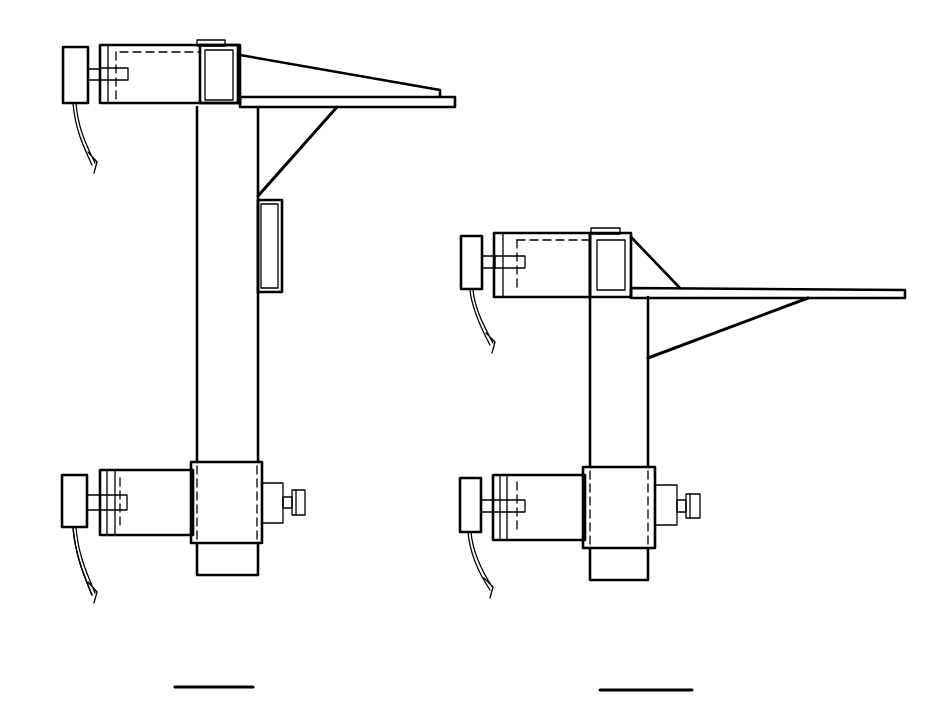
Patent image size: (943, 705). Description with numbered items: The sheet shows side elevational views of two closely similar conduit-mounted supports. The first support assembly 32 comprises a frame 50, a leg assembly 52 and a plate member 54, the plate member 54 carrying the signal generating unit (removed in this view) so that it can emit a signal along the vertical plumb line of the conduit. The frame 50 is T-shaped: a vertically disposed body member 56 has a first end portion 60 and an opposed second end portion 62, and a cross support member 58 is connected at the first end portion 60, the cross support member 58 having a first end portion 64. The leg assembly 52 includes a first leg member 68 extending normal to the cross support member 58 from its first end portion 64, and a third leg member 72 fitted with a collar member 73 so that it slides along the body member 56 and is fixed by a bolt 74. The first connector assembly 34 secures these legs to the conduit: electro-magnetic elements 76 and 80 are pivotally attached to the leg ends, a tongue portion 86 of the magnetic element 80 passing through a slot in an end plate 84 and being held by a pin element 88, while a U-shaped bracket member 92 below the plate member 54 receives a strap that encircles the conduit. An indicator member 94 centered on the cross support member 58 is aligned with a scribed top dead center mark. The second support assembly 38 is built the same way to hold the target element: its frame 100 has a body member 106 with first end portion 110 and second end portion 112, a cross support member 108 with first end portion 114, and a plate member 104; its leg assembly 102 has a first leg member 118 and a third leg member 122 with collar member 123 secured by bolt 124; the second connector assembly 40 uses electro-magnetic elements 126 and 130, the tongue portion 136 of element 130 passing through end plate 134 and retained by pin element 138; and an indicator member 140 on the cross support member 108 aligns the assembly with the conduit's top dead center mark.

In FIG. 7, the first support assembly 32 is at (379, 61).
In FIG. 7, the first connector assembly 34 is at (54, 107).
In FIG. 7, the frame 50 is at (290, 304).
In FIG. 7, the leg assembly 52 is at (170, 240).
In FIG. 7, the plate member 54 is at (395, 107).
In FIG. 7, the body member 56 is at (245, 327).
In FIG. 7, the cross support member 58 is at (275, 89).
In FIG. 7, the first end portion 60 is at (230, 341).
In FIG. 7, the second end portion 62 is at (237, 563).
In FIG. 7, the first end portion 64 is at (226, 87).
In FIG. 7, the first leg member 68 is at (140, 93).
In FIG. 7, the third leg member 72 is at (146, 517).
In FIG. 7, the collar member 73 is at (267, 468).
In FIG. 7, the bolt 74 is at (305, 500).
In FIG. 7, the electro-magnetic element 76 is at (75, 57).
In FIG. 7, the electro-magnetic element 80 is at (62, 518).
In FIG. 7, the end plate 84 is at (97, 523).
In FIG. 7, the tongue portion 86 is at (130, 498).
In FIG. 7, the pin element 88 is at (122, 478).
In FIG. 7, the U-shaped bracket member 92 is at (283, 230).
In FIG. 7, the indicator member 94 is at (212, 40).
In FIG. 8, the second support assembly 38 is at (764, 210).
In FIG. 8, the second connector assembly 40 is at (442, 389).
In FIG. 8, the frame 100 is at (716, 402).
In FIG. 8, the leg assembly 102 is at (568, 297).
In FIG. 8, the plate member 104 is at (840, 288).
In FIG. 8, the body member 106 is at (650, 418).
In FIG. 8, the cross support member 108 is at (659, 253).
In FIG. 8, the first end portion 110 is at (627, 456).
In FIG. 8, the second end portion 112 is at (613, 565).
In FIG. 8, the first end portion 114 is at (617, 278).
In FIG. 8, the first leg member 118 is at (525, 233).
In FIG. 8, the third leg member 122 is at (526, 497).
In FIG. 8, the collar member 123 is at (657, 537).
In FIG. 8, the bolt 124 is at (700, 498).
In FIG. 8, the electro-magnetic element 126 is at (470, 262).
In FIG. 8, the electro-magnetic element 130 is at (466, 511).
In FIG. 8, the end plate 134 is at (490, 482).
In FIG. 8, the tongue portion 136 is at (527, 505).
In FIG. 8, the pin element 138 is at (518, 487).
In FIG. 8, the indicator member 140 is at (605, 228).